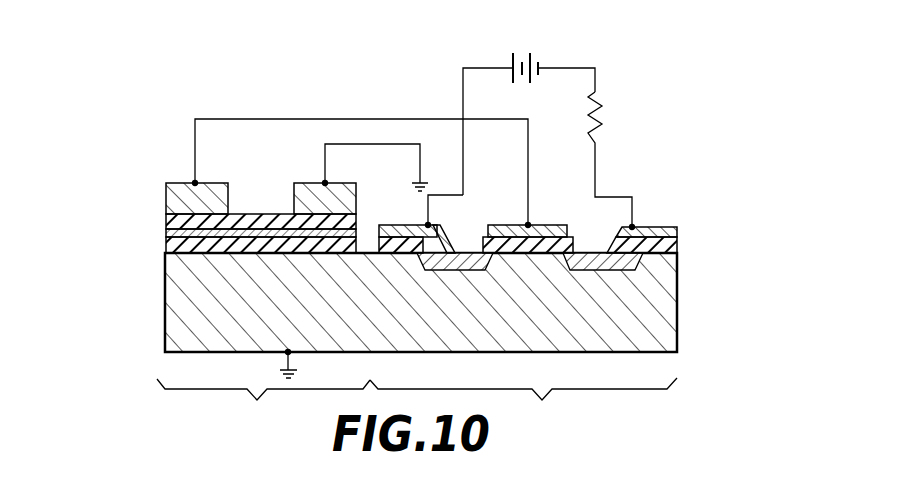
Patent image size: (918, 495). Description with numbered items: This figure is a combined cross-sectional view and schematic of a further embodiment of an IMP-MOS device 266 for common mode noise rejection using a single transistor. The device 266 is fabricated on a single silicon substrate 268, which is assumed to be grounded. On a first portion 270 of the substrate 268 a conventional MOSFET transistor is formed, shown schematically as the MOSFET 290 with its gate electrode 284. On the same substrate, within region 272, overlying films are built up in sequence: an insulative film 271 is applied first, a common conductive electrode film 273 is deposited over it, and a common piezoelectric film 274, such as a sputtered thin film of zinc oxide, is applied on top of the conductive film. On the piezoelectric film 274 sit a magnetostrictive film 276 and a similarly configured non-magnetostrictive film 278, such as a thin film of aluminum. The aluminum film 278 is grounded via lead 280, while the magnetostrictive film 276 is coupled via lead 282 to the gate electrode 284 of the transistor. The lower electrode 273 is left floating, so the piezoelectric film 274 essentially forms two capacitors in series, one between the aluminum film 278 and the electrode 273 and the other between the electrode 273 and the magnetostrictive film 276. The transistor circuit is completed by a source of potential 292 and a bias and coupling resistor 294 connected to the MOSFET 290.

The device 266 is at (670, 156).
The silicon substrate 268 is at (672, 317).
The first portion 270 is at (523, 407).
The insulative film 271 is at (166, 245).
The region 272 is at (263, 409).
The common conductive electrode film 273 is at (166, 233).
The common piezoelectric film 274 is at (166, 222).
The magnetostrictive film 276 is at (173, 187).
The non-magnetostrictive film 278 is at (302, 185).
The lead 280 is at (418, 156).
The lead 282 is at (260, 118).
The gate electrode 284 is at (548, 224).
The MOSFET 290 is at (500, 214).
The source of potential 292 is at (540, 63).
The bias and coupling resistor 294 is at (600, 100).